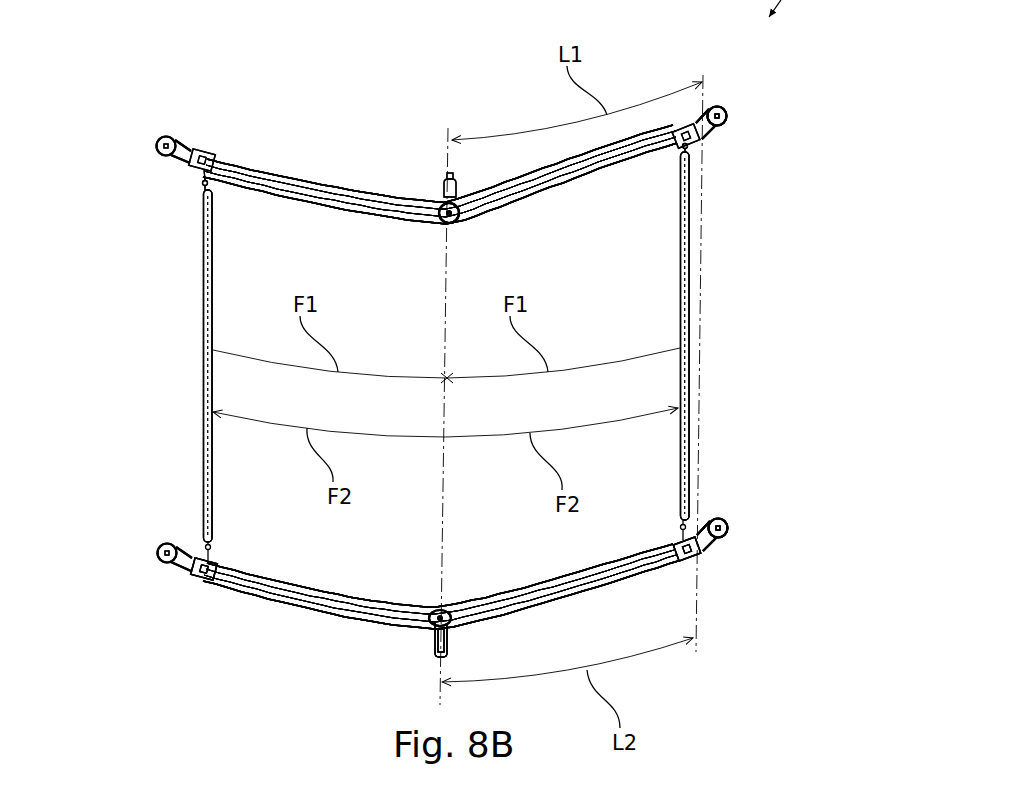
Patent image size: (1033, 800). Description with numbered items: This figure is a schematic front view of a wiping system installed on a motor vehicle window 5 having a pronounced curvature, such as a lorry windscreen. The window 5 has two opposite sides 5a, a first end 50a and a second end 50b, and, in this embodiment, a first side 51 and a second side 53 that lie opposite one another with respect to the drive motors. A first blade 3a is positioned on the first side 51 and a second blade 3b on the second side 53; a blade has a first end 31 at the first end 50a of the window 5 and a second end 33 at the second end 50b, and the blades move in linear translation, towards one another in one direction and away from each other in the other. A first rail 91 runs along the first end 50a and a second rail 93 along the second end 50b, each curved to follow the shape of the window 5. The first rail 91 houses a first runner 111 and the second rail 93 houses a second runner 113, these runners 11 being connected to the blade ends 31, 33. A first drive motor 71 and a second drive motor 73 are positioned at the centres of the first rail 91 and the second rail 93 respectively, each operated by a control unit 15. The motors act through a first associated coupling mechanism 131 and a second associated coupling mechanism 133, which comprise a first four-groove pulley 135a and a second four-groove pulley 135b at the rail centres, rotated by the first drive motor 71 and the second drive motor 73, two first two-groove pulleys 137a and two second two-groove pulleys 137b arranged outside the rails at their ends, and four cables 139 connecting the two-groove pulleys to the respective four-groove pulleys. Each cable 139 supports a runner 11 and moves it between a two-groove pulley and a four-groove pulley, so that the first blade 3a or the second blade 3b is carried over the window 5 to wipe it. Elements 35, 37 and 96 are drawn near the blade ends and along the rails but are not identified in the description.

The window 5 is at (660, 283).
The opposite sides of the window 5a is at (537, 188).
The first end of the window 50a is at (318, 205).
The second end of the window 50b is at (338, 598).
The first rail 91 is at (264, 174).
The second rail 93 is at (265, 605).
The leaf spring layer 96 is at (335, 198).
The first four-groove pulley 135a is at (461, 205).
The second four-groove pulley 135b is at (463, 621).
The first drive motor 71 is at (448, 173).
The second drive motor 73 is at (449, 645).
The control unit 15 is at (441, 184).
The first associated coupling mechanism 131 is at (431, 204).
The second associated coupling mechanism 133 is at (437, 657).
The first two-groove pulleys 137a is at (164, 137).
The second two-groove pulleys 137b is at (160, 555).
The cables 139 is at (188, 142).
The runner 11 is at (209, 150).
The first runner 111 is at (214, 157).
The second runner 113 is at (213, 563).
The lower joint 37 is at (200, 576).
The upper ball joint 35 is at (202, 172).
The first end of the blade 31 is at (203, 189).
The second end of the blade 33 is at (203, 531).
The first side of the window 51 is at (692, 226).
The second side of the window 53 is at (220, 288).
The first blade 3a is at (692, 377).
The second blade 3b is at (205, 385).